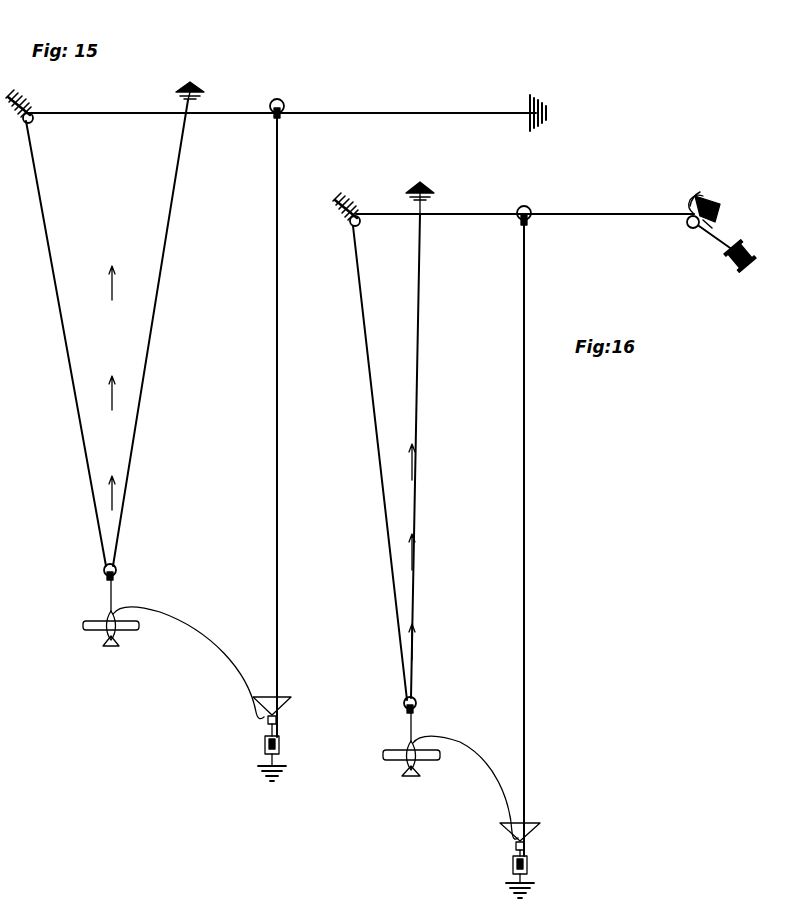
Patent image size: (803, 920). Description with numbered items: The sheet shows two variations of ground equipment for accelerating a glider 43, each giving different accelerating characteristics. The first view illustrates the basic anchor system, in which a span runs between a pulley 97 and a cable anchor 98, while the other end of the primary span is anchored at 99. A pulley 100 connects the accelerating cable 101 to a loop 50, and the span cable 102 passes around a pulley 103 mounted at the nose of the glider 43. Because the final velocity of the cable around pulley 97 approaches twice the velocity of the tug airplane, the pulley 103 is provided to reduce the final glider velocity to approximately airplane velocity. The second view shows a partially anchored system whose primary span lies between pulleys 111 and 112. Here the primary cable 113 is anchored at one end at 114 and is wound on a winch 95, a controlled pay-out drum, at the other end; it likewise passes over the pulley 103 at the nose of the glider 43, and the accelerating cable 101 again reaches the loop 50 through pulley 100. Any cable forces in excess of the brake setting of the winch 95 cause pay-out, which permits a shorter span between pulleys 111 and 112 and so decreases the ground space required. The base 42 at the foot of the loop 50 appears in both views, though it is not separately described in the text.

In FIG. 15, the base anchor 42 is at (281, 750).
In FIG. 16, the base anchor 42 is at (530, 862).
In FIG. 15, the glider 43 is at (94, 631).
In FIG. 16, the glider 43 is at (396, 759).
In FIG. 15, the loop 50 is at (284, 698).
In FIG. 16, the loop 50 is at (533, 823).
In FIG. 16, the winch 95 is at (748, 246).
In FIG. 15, the pulley 97 is at (32, 112).
In FIG. 15, the cable anchor 98 is at (527, 108).
In FIG. 15, the anchor 99 is at (198, 103).
In FIG. 15, the pulley 100 is at (285, 104).
In FIG. 16, the pulley 100 is at (530, 208).
In FIG. 15, the accelerating cable 101 is at (276, 444).
In FIG. 16, the accelerating cable 101 is at (526, 430).
In FIG. 15, the span cable 102 is at (58, 320).
In FIG. 15, the pulley 103 is at (116, 574).
In FIG. 16, the pulley 103 is at (418, 705).
In FIG. 16, the pulley 111 is at (358, 214).
In FIG. 16, the pulley 112 is at (706, 198).
In FIG. 16, the primary cable 113 is at (419, 378).
In FIG. 16, the anchor 114 is at (421, 196).